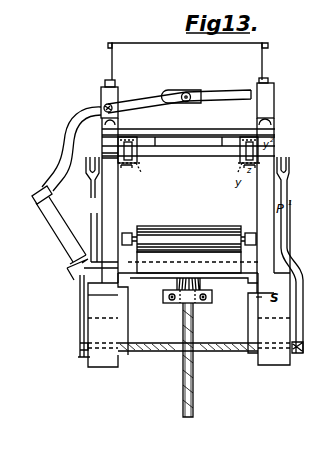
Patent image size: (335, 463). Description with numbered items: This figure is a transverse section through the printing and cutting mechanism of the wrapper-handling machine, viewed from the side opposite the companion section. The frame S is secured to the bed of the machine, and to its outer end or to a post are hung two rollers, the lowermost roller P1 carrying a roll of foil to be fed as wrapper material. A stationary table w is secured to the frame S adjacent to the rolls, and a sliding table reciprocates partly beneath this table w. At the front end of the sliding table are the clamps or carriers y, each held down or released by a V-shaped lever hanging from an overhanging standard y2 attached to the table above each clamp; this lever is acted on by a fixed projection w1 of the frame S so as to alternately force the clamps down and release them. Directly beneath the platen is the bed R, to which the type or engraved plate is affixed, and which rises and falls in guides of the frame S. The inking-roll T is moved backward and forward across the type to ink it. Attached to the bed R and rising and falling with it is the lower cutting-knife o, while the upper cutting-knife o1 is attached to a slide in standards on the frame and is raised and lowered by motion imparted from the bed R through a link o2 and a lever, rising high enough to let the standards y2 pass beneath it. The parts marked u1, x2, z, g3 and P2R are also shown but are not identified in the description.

The stationary table w is at (188, 61).
The fixed projection w1 is at (109, 99).
The right box u1 is at (265, 98).
The lower cutting-knife o is at (177, 101).
The upper cutting-knife o1 is at (188, 123).
The rack bar x2 is at (188, 147).
The overhanging standard y2 is at (117, 149).
The clamp or carrier y is at (140, 176).
The clamp bracket z is at (126, 171).
The curved pipe g3 is at (71, 149).
The link o2 is at (60, 233).
The roller P1 is at (100, 212).
The inking-roll T is at (189, 239).
The bed R is at (193, 262).
The frame S is at (103, 320).
The rod P2R is at (187, 347).